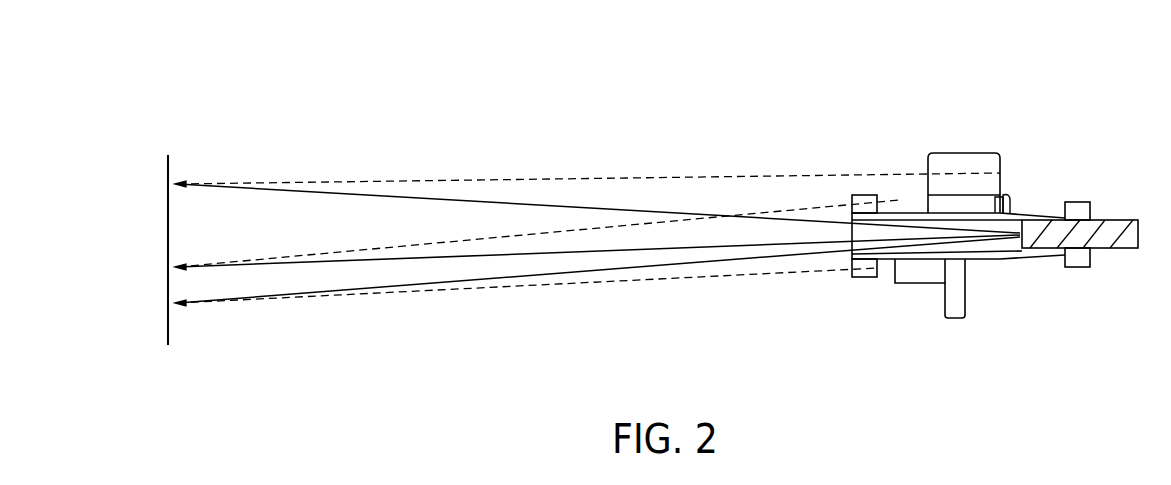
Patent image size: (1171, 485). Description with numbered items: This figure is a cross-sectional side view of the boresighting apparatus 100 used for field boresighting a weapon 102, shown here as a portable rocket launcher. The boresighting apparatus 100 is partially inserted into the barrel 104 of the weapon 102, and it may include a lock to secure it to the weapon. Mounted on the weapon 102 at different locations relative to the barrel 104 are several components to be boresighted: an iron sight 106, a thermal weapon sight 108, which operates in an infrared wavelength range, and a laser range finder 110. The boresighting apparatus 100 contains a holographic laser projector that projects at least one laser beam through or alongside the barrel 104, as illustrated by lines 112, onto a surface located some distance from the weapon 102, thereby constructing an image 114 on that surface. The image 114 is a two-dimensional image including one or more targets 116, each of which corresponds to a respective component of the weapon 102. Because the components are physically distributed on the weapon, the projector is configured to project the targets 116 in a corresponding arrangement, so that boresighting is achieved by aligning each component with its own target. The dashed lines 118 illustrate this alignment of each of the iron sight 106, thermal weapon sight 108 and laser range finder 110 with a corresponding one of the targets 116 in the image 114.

The boresighting apparatus 100 is at (1112, 237).
The weapon 102 is at (973, 113).
The barrel 104 is at (900, 211).
The iron sight 106 is at (1010, 193).
The thermal weapon sight 108 is at (983, 162).
The laser range finder 110 is at (920, 283).
The lines 112 is at (482, 290).
The image 114 is at (168, 170).
The targets 116 is at (168, 303).
The dashed lines 118 is at (597, 268).